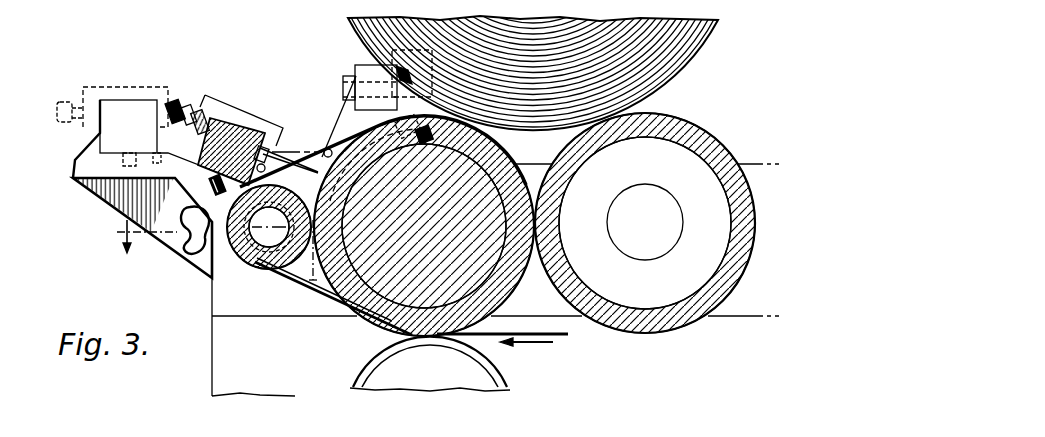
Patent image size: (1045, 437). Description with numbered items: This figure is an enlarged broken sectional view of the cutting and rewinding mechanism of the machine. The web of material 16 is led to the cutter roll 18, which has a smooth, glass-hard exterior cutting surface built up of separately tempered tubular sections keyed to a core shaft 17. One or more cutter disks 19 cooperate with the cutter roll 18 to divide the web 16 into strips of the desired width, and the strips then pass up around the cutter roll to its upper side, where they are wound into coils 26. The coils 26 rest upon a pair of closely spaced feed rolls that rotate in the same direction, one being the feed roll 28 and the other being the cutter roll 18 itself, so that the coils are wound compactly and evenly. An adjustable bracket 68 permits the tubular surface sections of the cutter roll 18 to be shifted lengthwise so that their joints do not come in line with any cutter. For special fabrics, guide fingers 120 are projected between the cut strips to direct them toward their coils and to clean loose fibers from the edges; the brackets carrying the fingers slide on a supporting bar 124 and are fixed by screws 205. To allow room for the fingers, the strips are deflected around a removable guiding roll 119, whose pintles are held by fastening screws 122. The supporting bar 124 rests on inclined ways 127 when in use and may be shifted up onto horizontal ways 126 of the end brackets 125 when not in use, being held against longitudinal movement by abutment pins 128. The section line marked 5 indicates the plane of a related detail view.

The section line 5 is at (208, 253).
The web of material 16 is at (565, 335).
The core shaft 17 is at (325, 145).
The cutter roll 18 is at (505, 296).
The cutter disks 19 is at (430, 364).
The coils 26 is at (675, 67).
The feed roll 28 is at (645, 223).
The adjustable bracket 68 is at (355, 76).
The guiding roll 119 is at (265, 263).
The fingers 120 is at (312, 170).
The fastening screws 122 is at (195, 255).
The supporting bar 124 is at (238, 127).
The end brackets 125 is at (75, 178).
The horizontal ways 126 is at (113, 162).
The inclined ways 127 is at (180, 197).
The abutment pins 128 is at (217, 200).
The screws 205 is at (173, 120).